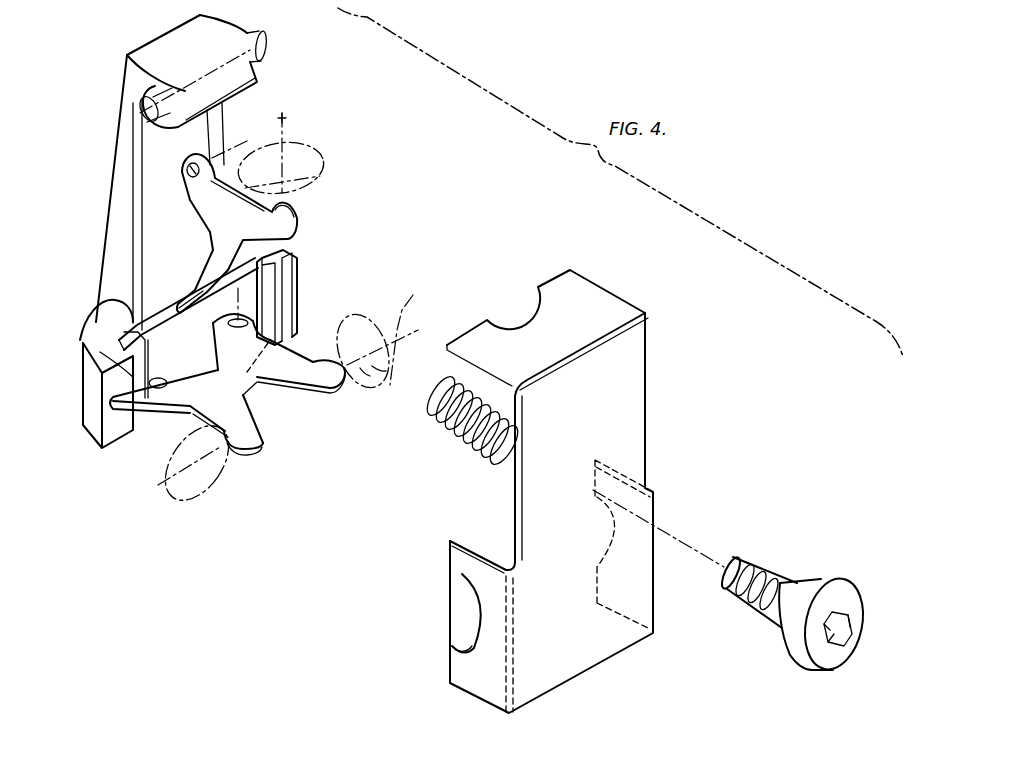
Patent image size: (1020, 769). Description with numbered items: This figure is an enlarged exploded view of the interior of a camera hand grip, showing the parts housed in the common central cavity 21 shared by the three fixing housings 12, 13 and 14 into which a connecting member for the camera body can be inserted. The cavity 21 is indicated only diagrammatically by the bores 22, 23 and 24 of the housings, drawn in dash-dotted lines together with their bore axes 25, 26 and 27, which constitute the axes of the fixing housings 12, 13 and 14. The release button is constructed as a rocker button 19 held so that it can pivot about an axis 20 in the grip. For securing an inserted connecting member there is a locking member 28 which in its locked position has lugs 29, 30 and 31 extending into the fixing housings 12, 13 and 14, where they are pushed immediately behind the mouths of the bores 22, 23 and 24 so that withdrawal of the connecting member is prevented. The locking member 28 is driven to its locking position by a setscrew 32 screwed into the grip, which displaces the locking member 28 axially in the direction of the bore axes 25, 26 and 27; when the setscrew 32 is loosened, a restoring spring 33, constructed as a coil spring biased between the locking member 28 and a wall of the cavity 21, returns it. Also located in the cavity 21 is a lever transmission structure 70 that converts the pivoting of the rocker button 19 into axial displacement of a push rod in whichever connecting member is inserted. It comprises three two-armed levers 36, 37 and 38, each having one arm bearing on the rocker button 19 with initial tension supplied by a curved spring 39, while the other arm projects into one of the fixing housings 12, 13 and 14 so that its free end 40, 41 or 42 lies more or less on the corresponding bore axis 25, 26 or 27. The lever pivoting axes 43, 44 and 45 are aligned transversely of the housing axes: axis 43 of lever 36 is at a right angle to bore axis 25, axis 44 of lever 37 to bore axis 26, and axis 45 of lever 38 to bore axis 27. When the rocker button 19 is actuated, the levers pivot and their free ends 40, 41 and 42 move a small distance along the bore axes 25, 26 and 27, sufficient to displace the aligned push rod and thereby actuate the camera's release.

The fixing housing 12 is at (227, 399).
The fixing housing 13 is at (375, 362).
The fixing housing 14 is at (325, 165).
The rocker button 19 is at (122, 140).
The axis 20 is at (284, 32).
The central cavity 21 is at (313, 340).
The bore 22 is at (197, 508).
The bore 23 is at (395, 342).
The bore 24 is at (297, 160).
The bore axis 25 is at (170, 508).
The bore axis 26 is at (415, 335).
The bore axis 27 is at (287, 115).
The locking member 28 is at (607, 412).
The lug 29 is at (462, 573).
The lug 30 is at (660, 536).
The lug 31 is at (581, 292).
The setscrew 32 is at (762, 570).
The restoring spring 33 is at (458, 433).
The two-armed lever 36 is at (247, 424).
The two-armed lever 37 is at (226, 346).
The two-armed lever 38 is at (197, 203).
The curved spring 39 is at (115, 308).
The free end 40 is at (265, 457).
The free end 41 is at (363, 374).
The free end 42 is at (292, 204).
The lever pivoting axis 43 is at (112, 344).
The lever pivoting axis 44 is at (248, 300).
The lever pivoting axis 45 is at (163, 187).
The lever transmission structure 70 is at (201, 242).